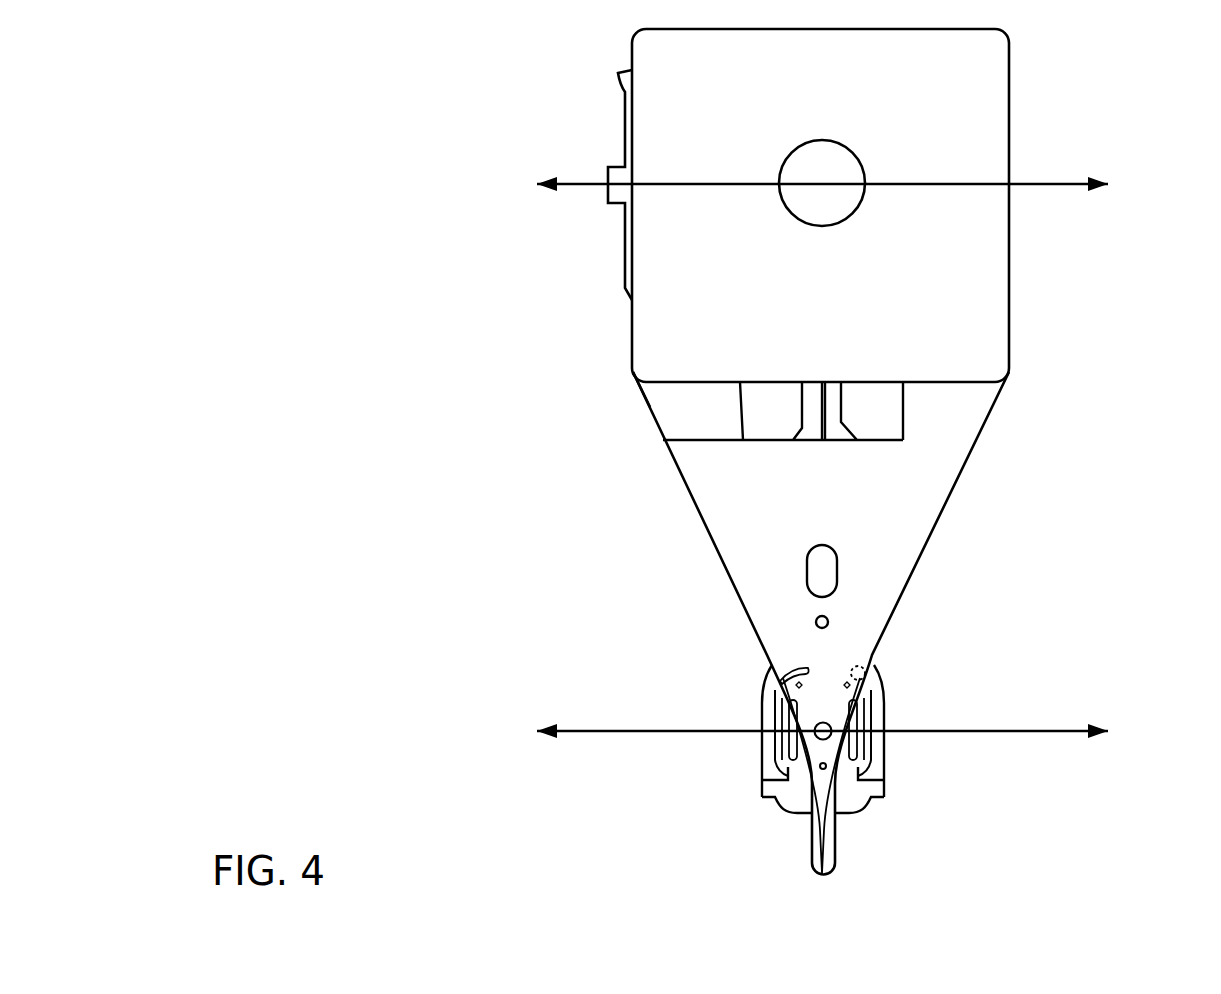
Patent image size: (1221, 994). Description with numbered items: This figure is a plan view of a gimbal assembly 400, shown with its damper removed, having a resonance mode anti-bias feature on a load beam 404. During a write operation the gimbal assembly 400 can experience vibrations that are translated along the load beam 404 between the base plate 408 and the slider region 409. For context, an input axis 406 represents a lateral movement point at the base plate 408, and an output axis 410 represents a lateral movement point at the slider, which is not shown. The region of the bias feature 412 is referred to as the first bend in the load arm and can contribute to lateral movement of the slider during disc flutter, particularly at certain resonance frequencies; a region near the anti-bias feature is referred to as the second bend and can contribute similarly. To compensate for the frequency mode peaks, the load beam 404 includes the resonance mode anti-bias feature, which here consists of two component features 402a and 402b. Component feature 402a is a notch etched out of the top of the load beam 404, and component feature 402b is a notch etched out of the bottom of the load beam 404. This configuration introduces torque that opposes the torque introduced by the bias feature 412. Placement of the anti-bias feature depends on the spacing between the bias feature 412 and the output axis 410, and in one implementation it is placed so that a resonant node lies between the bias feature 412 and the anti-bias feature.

The gimbal assembly 400 is at (462, 503).
The component feature 402a is at (790, 662).
The component feature 402b is at (856, 662).
The load beam 404 is at (940, 530).
The input axis 406 is at (1055, 183).
The base plate 408 is at (1009, 317).
The slider region 409 is at (642, 702).
The output axis 410 is at (1055, 730).
The bias feature 412 is at (615, 406).